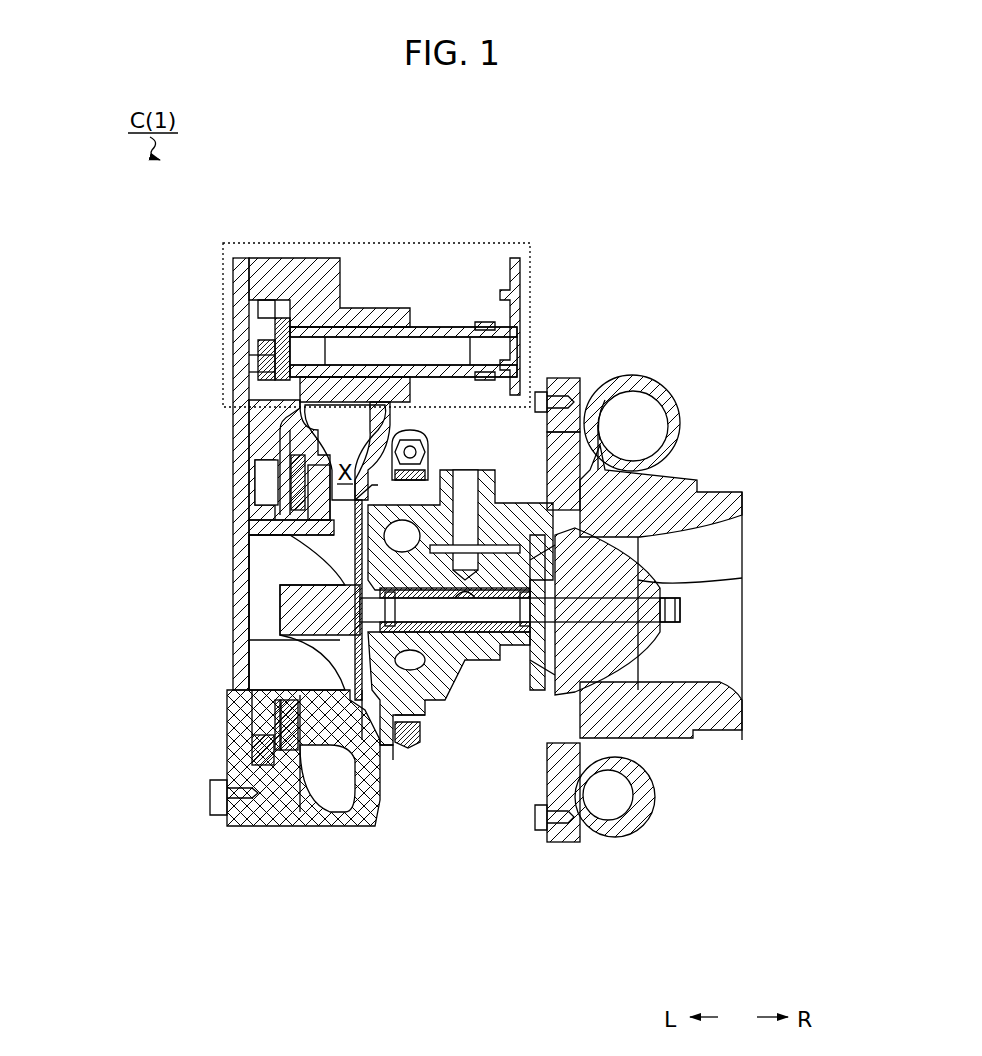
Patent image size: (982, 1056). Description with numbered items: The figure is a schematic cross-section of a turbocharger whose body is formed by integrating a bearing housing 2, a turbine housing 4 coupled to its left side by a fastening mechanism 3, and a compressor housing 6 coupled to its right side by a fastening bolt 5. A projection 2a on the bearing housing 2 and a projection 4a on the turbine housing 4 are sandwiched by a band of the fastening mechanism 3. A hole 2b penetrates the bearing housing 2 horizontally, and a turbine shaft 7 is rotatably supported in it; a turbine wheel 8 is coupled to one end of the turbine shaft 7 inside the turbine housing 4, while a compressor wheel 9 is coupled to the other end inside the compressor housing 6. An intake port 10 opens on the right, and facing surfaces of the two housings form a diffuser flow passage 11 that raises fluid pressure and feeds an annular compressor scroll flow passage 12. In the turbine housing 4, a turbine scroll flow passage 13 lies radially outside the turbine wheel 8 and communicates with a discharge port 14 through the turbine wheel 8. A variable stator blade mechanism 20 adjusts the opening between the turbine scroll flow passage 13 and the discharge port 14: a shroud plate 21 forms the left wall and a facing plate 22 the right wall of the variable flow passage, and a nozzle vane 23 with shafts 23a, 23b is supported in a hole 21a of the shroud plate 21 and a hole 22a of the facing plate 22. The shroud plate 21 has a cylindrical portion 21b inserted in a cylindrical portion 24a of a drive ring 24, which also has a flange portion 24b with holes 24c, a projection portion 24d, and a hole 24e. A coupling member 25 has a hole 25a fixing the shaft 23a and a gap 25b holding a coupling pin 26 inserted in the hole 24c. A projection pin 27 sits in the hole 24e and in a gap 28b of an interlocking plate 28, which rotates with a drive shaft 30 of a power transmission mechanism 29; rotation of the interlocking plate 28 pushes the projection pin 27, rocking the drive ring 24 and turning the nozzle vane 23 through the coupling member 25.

The bearing housing 2 is at (535, 505).
The projection 2a is at (420, 750).
The hole (bearing hole) 2b is at (540, 700).
The fastening mechanism 3 is at (418, 760).
The turbine housing 4 is at (300, 258).
The projection 4a is at (393, 765).
The fastening bolt 5 is at (549, 842).
The compressor housing 6 is at (717, 490).
The turbine shaft 7 is at (555, 645).
The turbine wheel 8 is at (233, 573).
The compressor wheel 9 is at (742, 578).
The intake port 10 is at (742, 525).
The diffuser flow passage 11 is at (598, 440).
The compressor scroll flow passage 12 is at (650, 402).
The turbine scroll flow passage 13 is at (380, 826).
The discharge port 14 is at (233, 555).
The variable stator blade mechanism 20 is at (233, 648).
The shroud plate 21 is at (233, 676).
The hole (shroud hole) 21a is at (233, 730).
The cylindrical portion 21b is at (233, 545).
The facing plate 22 is at (355, 826).
The hole (facing hole) 22a is at (335, 826).
The nozzle vane 23 is at (310, 826).
The shaft (blade shaft) 23a is at (297, 826).
The shaft (blade shaft) 23b is at (390, 826).
The drive ring 24 is at (233, 437).
The cylindrical portion 24a is at (233, 548).
The flange portion 24b is at (233, 470).
The hole (ring hole) 24c is at (233, 760).
The projection portion 24d is at (233, 360).
The hole (ring hole) 24e is at (233, 370).
The coupling member 25 is at (233, 405).
The hole (coupling hole) 25a is at (233, 712).
The gap 25b is at (277, 826).
The coupling pin 26 is at (227, 823).
The projection pin 27 is at (233, 345).
The interlocking plate 28 is at (262, 300).
The gap 28b is at (330, 398).
The power transmission mechanism 29 is at (478, 310).
The drive shaft 30 is at (418, 350).